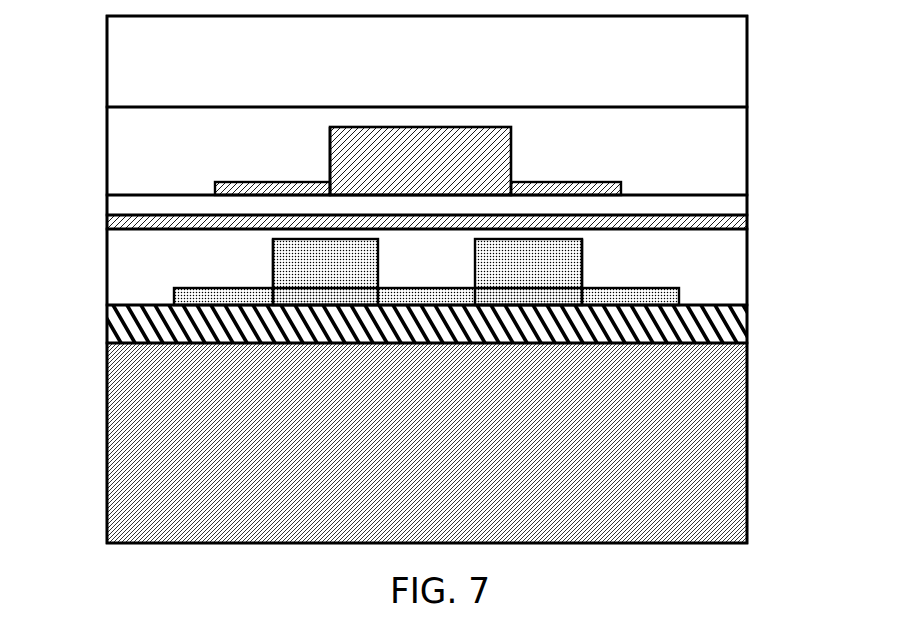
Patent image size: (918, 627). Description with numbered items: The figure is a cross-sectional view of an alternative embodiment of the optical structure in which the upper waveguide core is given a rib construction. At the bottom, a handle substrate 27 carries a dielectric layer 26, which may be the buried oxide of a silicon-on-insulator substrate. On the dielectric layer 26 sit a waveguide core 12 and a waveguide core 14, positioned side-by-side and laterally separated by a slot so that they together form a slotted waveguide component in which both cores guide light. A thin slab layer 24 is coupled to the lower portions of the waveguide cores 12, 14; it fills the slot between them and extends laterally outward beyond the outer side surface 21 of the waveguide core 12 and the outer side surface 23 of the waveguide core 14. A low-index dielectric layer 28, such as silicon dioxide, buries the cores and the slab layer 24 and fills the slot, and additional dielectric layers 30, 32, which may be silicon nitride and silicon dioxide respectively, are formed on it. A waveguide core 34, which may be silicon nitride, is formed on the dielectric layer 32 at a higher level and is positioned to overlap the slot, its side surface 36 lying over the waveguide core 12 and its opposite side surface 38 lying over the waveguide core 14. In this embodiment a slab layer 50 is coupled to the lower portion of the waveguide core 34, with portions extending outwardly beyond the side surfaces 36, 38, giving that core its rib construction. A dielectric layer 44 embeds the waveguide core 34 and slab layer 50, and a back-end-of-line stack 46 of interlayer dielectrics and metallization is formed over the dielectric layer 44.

The waveguide core 12 is at (295, 248).
The waveguide core 14 is at (547, 250).
The side surface 21 is at (278, 275).
The side surface 23 is at (582, 272).
The slab layer 24 is at (183, 297).
The dielectric layer 26 is at (710, 327).
The handle substrate 27 is at (137, 462).
The dielectric layer 28 is at (127, 260).
The dielectric layer 30 is at (733, 223).
The dielectric layer 32 is at (127, 208).
The waveguide core 34 is at (511, 136).
The side surface 36 is at (330, 162).
The side surface 38 is at (511, 174).
The dielectric layer 44 is at (127, 132).
The back-end-of-line stack 46 is at (705, 63).
The slab layer 50 is at (262, 193).